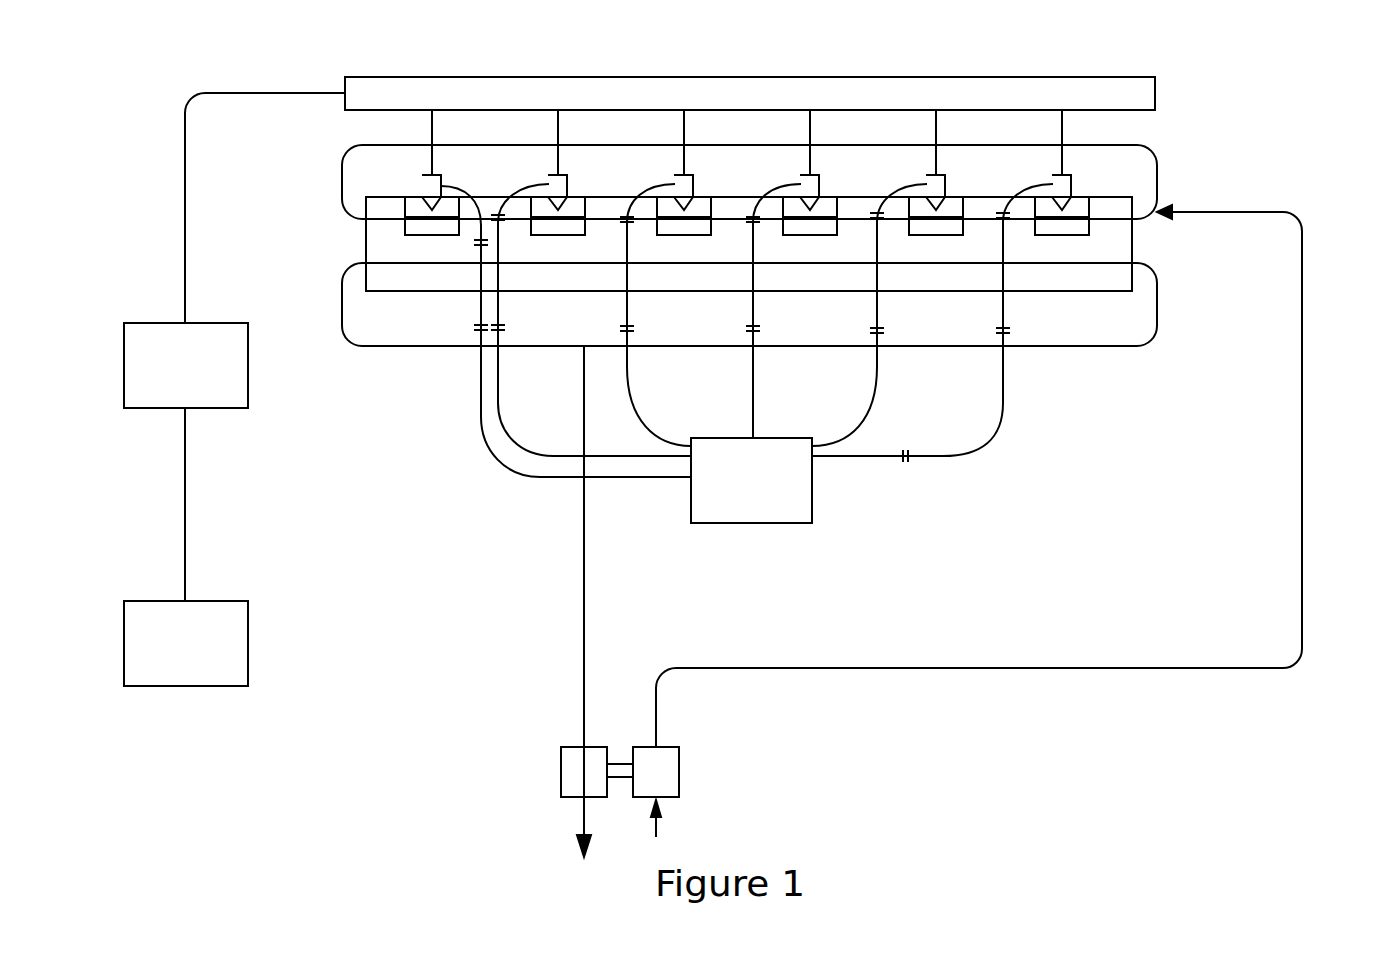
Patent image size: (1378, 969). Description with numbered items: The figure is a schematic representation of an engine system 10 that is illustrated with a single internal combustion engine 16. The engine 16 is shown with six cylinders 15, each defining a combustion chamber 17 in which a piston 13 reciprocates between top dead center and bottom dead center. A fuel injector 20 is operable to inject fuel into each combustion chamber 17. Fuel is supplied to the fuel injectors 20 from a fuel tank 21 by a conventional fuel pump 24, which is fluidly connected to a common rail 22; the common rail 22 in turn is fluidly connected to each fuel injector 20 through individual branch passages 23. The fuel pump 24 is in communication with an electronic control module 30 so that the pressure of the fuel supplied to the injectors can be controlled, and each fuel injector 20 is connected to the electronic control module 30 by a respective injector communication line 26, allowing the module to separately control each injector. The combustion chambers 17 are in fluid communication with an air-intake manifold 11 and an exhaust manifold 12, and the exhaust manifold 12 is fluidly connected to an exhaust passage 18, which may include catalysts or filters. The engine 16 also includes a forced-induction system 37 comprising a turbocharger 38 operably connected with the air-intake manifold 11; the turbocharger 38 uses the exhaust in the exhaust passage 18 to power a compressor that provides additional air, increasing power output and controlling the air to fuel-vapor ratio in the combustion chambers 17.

The engine system 10 is at (1263, 65).
The internal combustion engine 16 is at (1258, 118).
The common rail 22 is at (723, 77).
The branch passages 23 is at (558, 131).
The fuel injector 20 is at (557, 175).
The air-intake manifold 11 is at (1157, 187).
The exhaust manifold 12 is at (1157, 312).
The piston 13 is at (408, 236).
The cylinders 15 is at (459, 212).
The combustion chamber 17 is at (405, 226).
The injector communication lines 26 is at (481, 362).
The electronic control module 30 is at (755, 523).
The exhaust passage 18 is at (584, 573).
The fuel pump 24 is at (124, 324).
The fuel tank 21 is at (124, 603).
The turbocharger 38 is at (561, 753).
The forced-induction system 37 is at (723, 755).